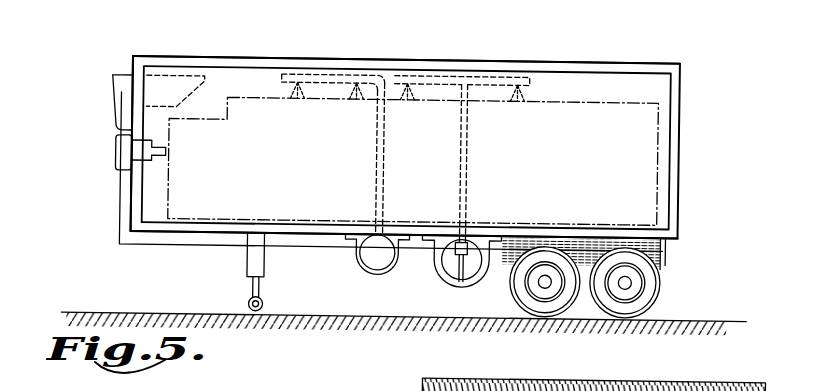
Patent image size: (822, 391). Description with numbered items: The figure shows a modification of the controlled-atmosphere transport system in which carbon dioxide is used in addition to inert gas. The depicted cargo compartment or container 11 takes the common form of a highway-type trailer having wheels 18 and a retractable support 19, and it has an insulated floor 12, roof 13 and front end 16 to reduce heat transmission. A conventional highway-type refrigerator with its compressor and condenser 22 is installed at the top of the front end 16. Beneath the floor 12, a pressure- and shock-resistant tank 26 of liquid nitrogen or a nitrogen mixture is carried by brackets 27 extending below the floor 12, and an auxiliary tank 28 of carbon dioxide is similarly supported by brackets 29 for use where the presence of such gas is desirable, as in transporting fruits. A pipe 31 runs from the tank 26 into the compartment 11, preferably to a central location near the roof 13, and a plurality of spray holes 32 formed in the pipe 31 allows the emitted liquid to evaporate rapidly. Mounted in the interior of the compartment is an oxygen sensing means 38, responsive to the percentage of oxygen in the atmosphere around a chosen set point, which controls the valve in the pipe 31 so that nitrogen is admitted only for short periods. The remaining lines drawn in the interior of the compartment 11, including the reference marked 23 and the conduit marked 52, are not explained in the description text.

The cargo compartment 11 is at (272, 49).
The floor 12 is at (163, 233).
The roof 13 is at (640, 56).
The front end 16 is at (133, 195).
The wheels 18 is at (608, 299).
The retractable support 19 is at (255, 255).
The compressor and condenser 22 is at (122, 93).
The interior lining 23 is at (636, 129).
The tank 26 is at (468, 282).
The brackets 27 is at (440, 254).
The auxiliary tank 28 is at (379, 258).
The brackets 29 is at (357, 254).
The pipe 31 is at (468, 161).
The spray holes 32 is at (542, 78).
The oxygen sensing means 38 is at (117, 153).
The conduit 52 is at (377, 162).